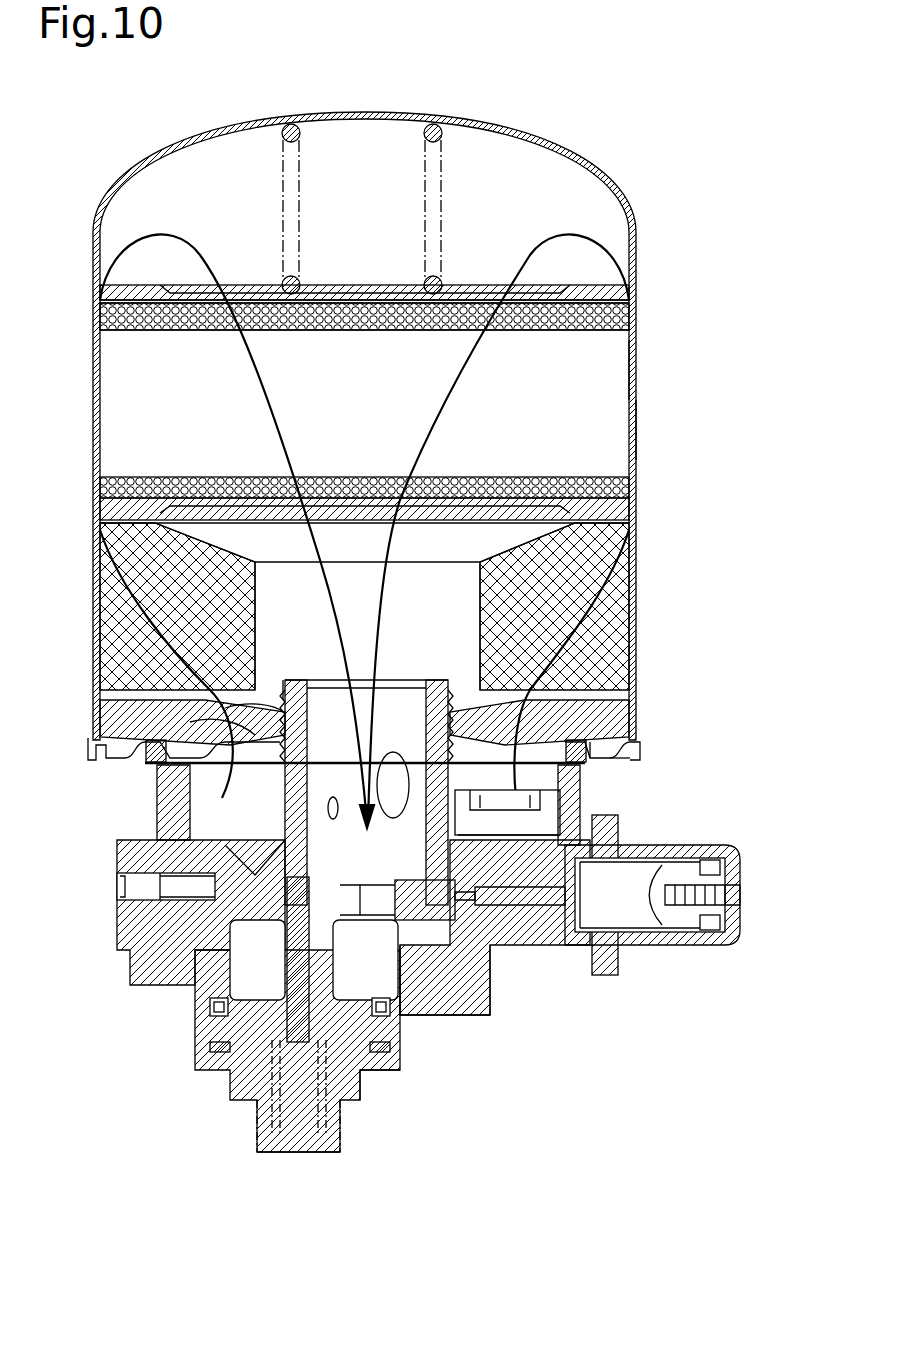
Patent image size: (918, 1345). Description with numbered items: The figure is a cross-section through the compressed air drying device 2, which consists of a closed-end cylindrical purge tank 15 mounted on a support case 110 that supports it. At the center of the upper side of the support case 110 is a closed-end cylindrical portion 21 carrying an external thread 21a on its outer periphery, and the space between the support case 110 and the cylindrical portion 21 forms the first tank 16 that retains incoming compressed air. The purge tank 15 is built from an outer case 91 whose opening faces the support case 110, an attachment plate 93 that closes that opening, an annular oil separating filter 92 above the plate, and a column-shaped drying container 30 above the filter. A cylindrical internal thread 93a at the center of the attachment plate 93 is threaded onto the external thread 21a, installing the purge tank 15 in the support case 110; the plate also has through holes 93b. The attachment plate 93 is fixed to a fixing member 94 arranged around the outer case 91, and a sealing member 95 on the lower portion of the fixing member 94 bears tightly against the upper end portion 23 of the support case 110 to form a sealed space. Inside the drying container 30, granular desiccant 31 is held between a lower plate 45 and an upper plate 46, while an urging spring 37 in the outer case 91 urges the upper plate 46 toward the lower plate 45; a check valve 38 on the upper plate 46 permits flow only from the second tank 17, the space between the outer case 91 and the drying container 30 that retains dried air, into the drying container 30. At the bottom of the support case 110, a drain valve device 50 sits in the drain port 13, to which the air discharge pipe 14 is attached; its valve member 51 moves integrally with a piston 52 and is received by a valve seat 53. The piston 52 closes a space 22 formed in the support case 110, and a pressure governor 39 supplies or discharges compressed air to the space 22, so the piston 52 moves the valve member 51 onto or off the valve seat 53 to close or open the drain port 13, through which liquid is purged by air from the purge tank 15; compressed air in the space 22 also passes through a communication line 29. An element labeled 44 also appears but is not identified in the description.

The compressed air drying device 2 is at (739, 74).
The drain port 13 is at (378, 1075).
The air discharge pipe 14 is at (340, 1132).
The purge tank 15 is at (637, 264).
The first tank 16 is at (228, 827).
The second tank 17 is at (379, 218).
The cylindrical portion 21 is at (292, 822).
The external thread 21a is at (290, 684).
The space 22 is at (338, 880).
The upper end portion 23 is at (603, 830).
The communication line 29 is at (400, 885).
The drying container 30 is at (636, 372).
The granular desiccant 31 is at (352, 330).
The urging spring 37 is at (447, 214).
The check valve 38 is at (200, 326).
The pressure governor 39 is at (750, 808).
The drain valve seat 44 is at (255, 1108).
The lower plate 45 is at (632, 530).
The upper plate 46 is at (600, 285).
The drain valve device 50 is at (418, 1088).
The valve member 51 is at (240, 1075).
The piston 52 is at (278, 955).
The valve seat 53 is at (232, 1025).
The outer case 91 is at (632, 430).
The oil separating filter 92 is at (615, 580).
The attachment plate 93 is at (628, 730).
The cylindrical internal thread 93a is at (290, 720).
The through holes 93b is at (245, 755).
The fixing member 94 is at (598, 760).
The sealing member 95 is at (588, 766).
The support case 110 is at (492, 995).